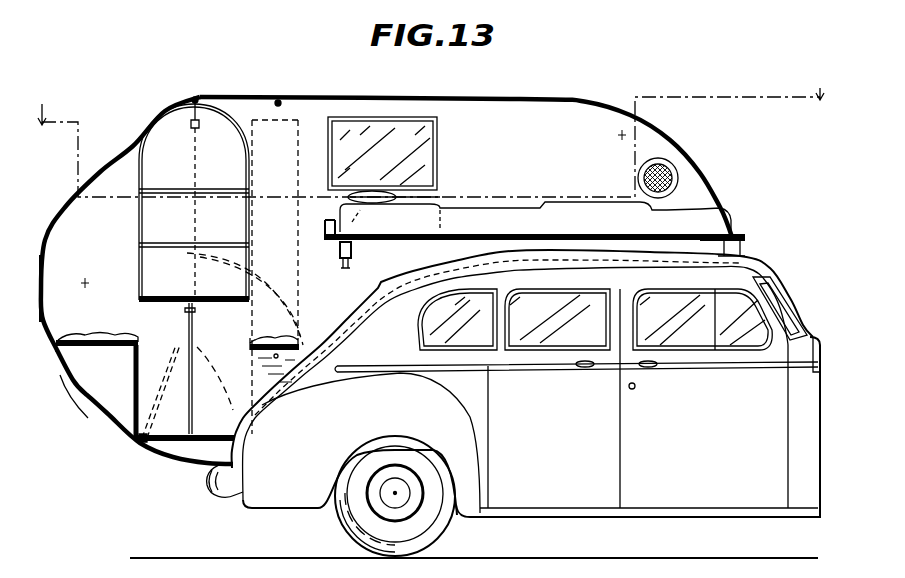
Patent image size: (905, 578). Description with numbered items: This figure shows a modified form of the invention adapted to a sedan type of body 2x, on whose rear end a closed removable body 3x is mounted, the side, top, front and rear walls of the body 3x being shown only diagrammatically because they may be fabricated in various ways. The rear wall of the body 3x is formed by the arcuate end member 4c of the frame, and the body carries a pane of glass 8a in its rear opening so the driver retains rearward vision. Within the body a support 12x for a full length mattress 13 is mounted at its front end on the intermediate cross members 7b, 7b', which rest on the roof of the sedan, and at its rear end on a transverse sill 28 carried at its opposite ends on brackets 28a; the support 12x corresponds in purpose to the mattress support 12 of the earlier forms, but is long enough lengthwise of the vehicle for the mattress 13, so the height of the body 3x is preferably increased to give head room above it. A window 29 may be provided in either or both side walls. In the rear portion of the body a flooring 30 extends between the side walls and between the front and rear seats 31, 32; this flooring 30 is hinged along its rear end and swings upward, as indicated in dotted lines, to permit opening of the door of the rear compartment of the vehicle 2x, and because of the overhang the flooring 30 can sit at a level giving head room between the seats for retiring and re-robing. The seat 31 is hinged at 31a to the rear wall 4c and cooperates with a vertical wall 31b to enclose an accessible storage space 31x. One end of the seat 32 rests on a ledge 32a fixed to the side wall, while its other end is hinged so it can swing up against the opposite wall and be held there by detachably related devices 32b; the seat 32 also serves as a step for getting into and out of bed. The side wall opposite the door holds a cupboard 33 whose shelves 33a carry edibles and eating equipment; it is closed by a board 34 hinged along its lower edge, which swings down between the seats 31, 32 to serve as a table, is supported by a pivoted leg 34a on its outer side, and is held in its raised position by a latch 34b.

The sedan type of body 2x is at (536, 432).
The removable body 3x is at (694, 137).
The end member 4c is at (116, 432).
The intermediate cross member 7b is at (522, 375).
The intermediate cross member 7b' is at (735, 238).
The pane of glass 8a is at (45, 272).
The support 12 is at (430, 133).
The support 12x is at (413, 242).
The mattress 13 is at (425, 210).
The transverse sill 28 is at (339, 250).
The bracket 28a is at (344, 268).
The window 29 is at (437, 155).
The flooring 30 is at (148, 446).
The front seat 31 is at (128, 334).
The hinge 31a is at (66, 353).
The vertical wall 31b is at (134, 400).
The storage space 31x is at (84, 408).
The rear seat 32 is at (290, 336).
The ledge 32a is at (298, 352).
The detachably related devices 32b is at (292, 103).
The cupboard 33 is at (232, 132).
The shelves 33a is at (222, 247).
The board 34 is at (194, 316).
The pivoted leg 34a is at (195, 338).
The latch 34b is at (195, 98).